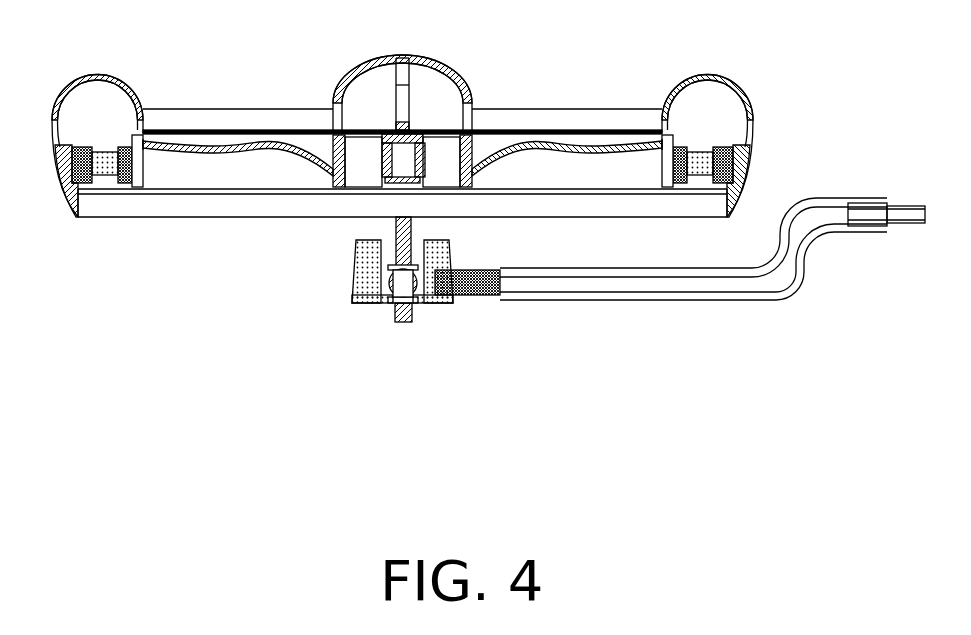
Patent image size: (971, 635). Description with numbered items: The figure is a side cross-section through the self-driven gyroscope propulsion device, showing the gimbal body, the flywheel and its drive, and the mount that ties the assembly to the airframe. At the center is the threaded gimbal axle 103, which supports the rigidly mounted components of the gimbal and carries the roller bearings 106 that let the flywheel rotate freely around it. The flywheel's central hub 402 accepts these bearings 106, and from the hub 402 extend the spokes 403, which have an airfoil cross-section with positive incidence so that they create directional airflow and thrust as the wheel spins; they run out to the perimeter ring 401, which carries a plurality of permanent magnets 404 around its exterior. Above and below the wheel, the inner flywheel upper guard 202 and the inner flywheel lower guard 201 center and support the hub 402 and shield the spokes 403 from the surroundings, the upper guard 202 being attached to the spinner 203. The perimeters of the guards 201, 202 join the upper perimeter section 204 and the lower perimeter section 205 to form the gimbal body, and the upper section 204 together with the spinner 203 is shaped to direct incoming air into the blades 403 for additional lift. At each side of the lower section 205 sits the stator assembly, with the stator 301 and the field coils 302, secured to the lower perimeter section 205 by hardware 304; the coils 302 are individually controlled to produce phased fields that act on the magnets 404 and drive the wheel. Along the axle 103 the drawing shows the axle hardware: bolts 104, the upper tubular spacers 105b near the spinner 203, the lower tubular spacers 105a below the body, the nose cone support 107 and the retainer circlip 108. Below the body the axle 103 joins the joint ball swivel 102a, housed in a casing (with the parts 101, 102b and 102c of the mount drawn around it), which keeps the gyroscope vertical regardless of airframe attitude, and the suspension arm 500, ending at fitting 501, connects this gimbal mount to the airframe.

The bracket 101 is at (352, 272).
The joint ball swivel 102a is at (428, 300).
The washer 102b is at (353, 293).
The connector block 102c is at (482, 298).
The threaded gimbal axle 103 is at (400, 305).
The bolts 104 is at (407, 157).
The lower tubular spacers 105a is at (392, 290).
The upper tubular spacers 105b is at (398, 110).
The roller bearings 106 is at (430, 133).
The nose cone support 107 is at (406, 88).
The retainer circlip 108 is at (403, 80).
The inner flywheel lower guard 201 is at (190, 207).
The inner flywheel upper guard 202 is at (243, 109).
The spinner 203 is at (358, 70).
The upper perimeter section 204 is at (130, 88).
The lower perimeter section 205 is at (66, 190).
The stator 301 is at (75, 146).
The field coils 302 is at (102, 152).
The hardware 304 is at (63, 148).
The perimeter ring 401 is at (144, 163).
The central hub 402 is at (337, 185).
The spokes 403 is at (256, 158).
The permanent magnets 404 is at (137, 182).
The suspension arm 500 is at (700, 301).
The plug 501 is at (907, 220).